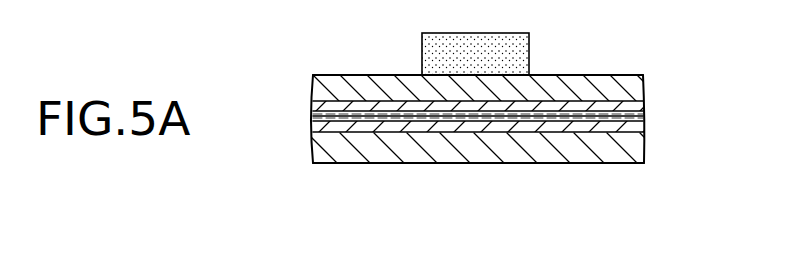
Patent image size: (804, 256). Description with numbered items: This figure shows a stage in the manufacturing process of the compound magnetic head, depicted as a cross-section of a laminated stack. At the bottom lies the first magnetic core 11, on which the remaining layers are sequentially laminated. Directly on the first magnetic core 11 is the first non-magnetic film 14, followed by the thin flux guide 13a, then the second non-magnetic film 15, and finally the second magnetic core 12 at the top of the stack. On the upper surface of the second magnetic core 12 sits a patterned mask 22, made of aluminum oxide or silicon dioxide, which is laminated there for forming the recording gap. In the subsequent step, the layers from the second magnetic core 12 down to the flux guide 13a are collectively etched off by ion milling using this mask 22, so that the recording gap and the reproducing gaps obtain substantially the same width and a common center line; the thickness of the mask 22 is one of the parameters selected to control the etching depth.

The first magnetic core 11 is at (342, 152).
The second magnetic core 12 is at (353, 88).
The flux guide 13a is at (504, 121).
The first non-magnetic film 14 is at (390, 112).
The second non-magnetic film 15 is at (620, 130).
The patterned mask 22 is at (530, 53).